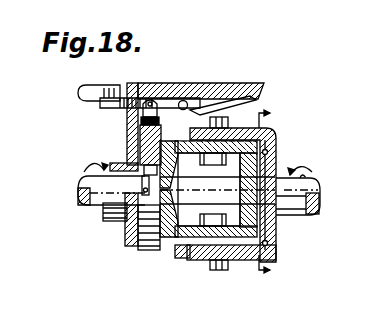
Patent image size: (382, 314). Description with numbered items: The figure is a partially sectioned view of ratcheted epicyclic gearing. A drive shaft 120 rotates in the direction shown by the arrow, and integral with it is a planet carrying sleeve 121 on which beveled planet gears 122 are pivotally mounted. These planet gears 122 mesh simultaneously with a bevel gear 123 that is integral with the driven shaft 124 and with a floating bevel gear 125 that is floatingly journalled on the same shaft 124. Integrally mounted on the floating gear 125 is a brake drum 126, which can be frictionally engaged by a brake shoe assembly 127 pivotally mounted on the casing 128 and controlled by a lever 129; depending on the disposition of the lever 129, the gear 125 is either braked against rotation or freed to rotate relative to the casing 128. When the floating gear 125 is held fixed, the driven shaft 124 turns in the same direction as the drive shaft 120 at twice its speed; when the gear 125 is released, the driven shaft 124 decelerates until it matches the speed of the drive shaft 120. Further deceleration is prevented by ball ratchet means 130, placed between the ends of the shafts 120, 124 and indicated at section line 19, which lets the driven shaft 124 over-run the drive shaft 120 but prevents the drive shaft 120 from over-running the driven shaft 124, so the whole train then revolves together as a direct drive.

The section line 19 is at (276, 194).
The drive shaft 120 is at (306, 180).
The planet carrying sleeve 121 is at (233, 260).
The beveled planet gears 122 is at (224, 131).
The bevel gear 123 is at (320, 207).
The driven shaft 124 is at (102, 207).
The floating bevel gear 125 is at (176, 232).
The brake drum 126 is at (145, 250).
The brake shoe assembly 127 is at (127, 131).
The casing 128 is at (172, 82).
The lever 129 is at (112, 108).
The ball ratchet means 130 is at (266, 152).